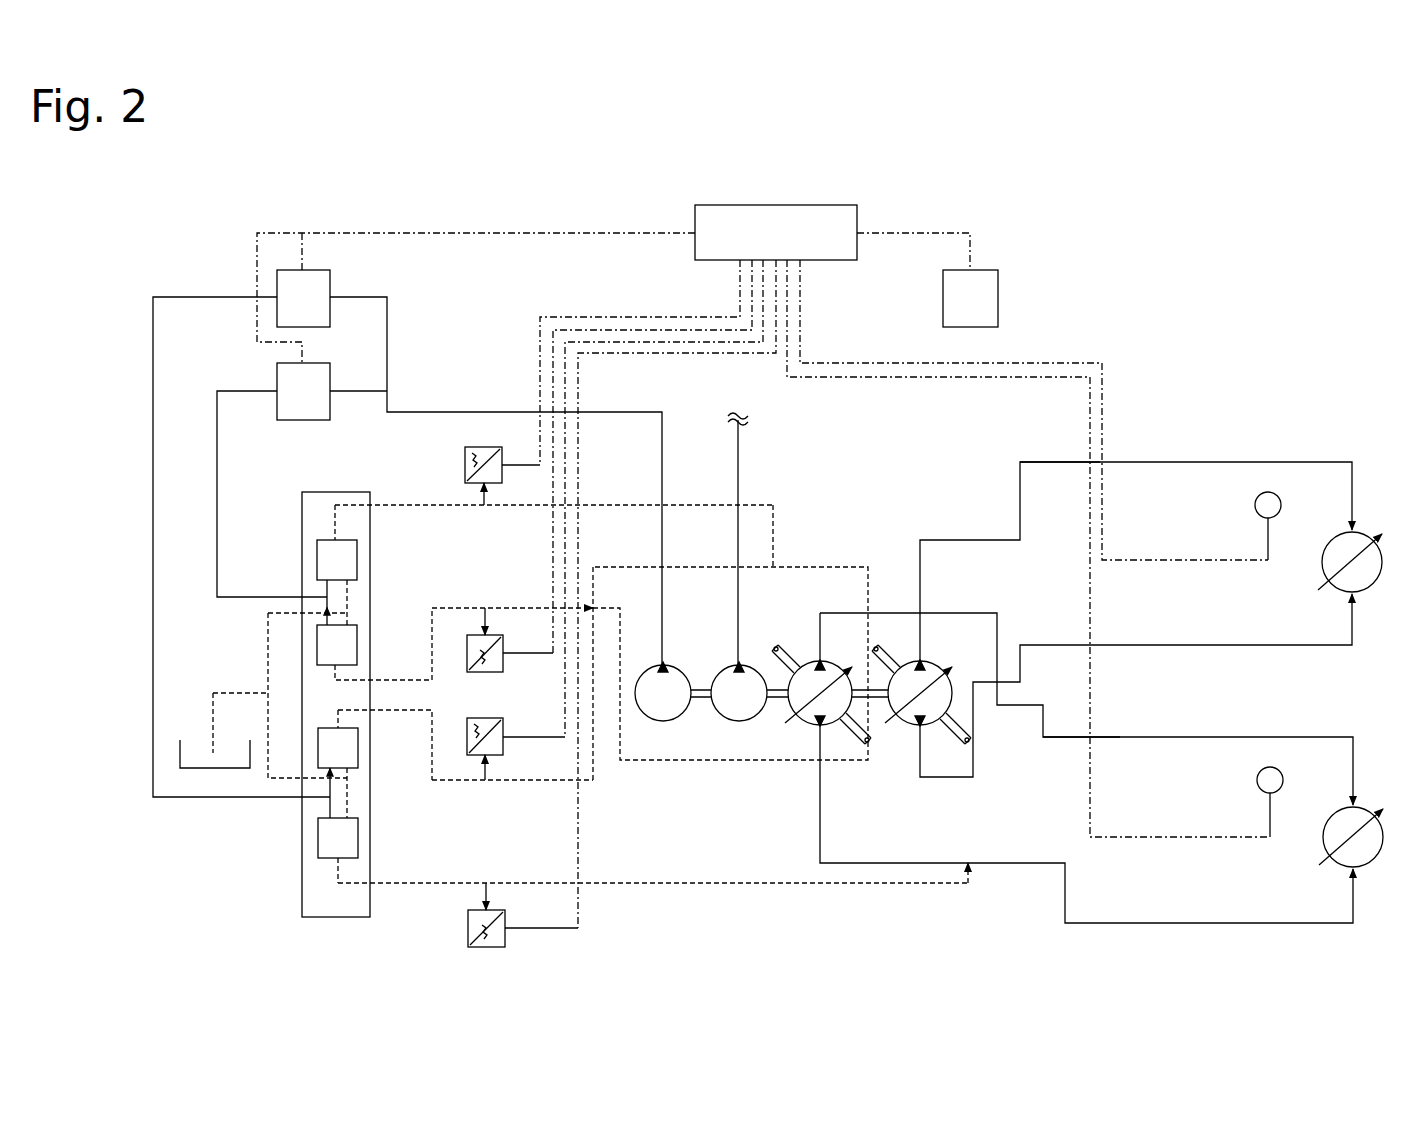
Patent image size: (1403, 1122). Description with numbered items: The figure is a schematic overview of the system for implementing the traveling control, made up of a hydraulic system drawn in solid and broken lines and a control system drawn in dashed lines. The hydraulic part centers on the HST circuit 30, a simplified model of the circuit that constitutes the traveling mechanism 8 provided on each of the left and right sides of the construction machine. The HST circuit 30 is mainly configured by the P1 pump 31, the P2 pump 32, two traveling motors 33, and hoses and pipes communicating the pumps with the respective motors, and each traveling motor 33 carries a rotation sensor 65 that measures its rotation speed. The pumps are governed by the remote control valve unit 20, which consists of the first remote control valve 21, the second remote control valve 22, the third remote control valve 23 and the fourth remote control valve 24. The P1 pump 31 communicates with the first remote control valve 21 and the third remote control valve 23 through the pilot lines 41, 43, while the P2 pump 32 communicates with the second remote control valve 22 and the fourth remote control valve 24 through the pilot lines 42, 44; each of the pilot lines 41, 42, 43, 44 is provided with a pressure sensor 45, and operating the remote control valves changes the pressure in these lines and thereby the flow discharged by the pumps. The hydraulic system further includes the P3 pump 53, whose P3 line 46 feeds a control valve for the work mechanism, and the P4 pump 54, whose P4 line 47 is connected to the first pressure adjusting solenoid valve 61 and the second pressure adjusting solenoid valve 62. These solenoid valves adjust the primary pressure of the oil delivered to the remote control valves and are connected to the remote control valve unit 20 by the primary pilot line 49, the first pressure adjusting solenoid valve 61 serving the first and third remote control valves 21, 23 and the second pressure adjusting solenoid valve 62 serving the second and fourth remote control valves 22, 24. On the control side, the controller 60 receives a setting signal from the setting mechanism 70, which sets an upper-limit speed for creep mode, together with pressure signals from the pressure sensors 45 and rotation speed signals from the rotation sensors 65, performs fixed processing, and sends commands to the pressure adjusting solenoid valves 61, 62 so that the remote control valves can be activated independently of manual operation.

The traveling mechanism 8 is at (1267, 460).
The remote control valve unit 20 is at (298, 526).
The first remote control valve 21 is at (358, 745).
The second remote control valve 22 is at (357, 555).
The third remote control valve 23 is at (358, 835).
The fourth remote control valve 24 is at (357, 638).
The HST circuit 30 is at (1204, 460).
The P1 pump 31 is at (905, 725).
The P2 pump 32 is at (803, 725).
The traveling motor 33 is at (1362, 535).
The pilot line 41 is at (462, 782).
The pilot line 42 is at (458, 507).
The pilot line 43 is at (418, 885).
The pilot line 44 is at (462, 608).
The pressure sensor 45 is at (465, 465).
The P3 line 46 is at (742, 455).
The P4 line 47 is at (660, 455).
The primary pilot line 49 is at (153, 493).
The P3 pump 53 is at (739, 722).
The P4 pump 54 is at (663, 722).
The controller 60 is at (832, 260).
The first pressure adjusting solenoid valve 61 is at (332, 282).
The second pressure adjusting solenoid valve 62 is at (333, 418).
The rotation sensor 65 is at (1255, 505).
The setting mechanism 70 is at (970, 298).